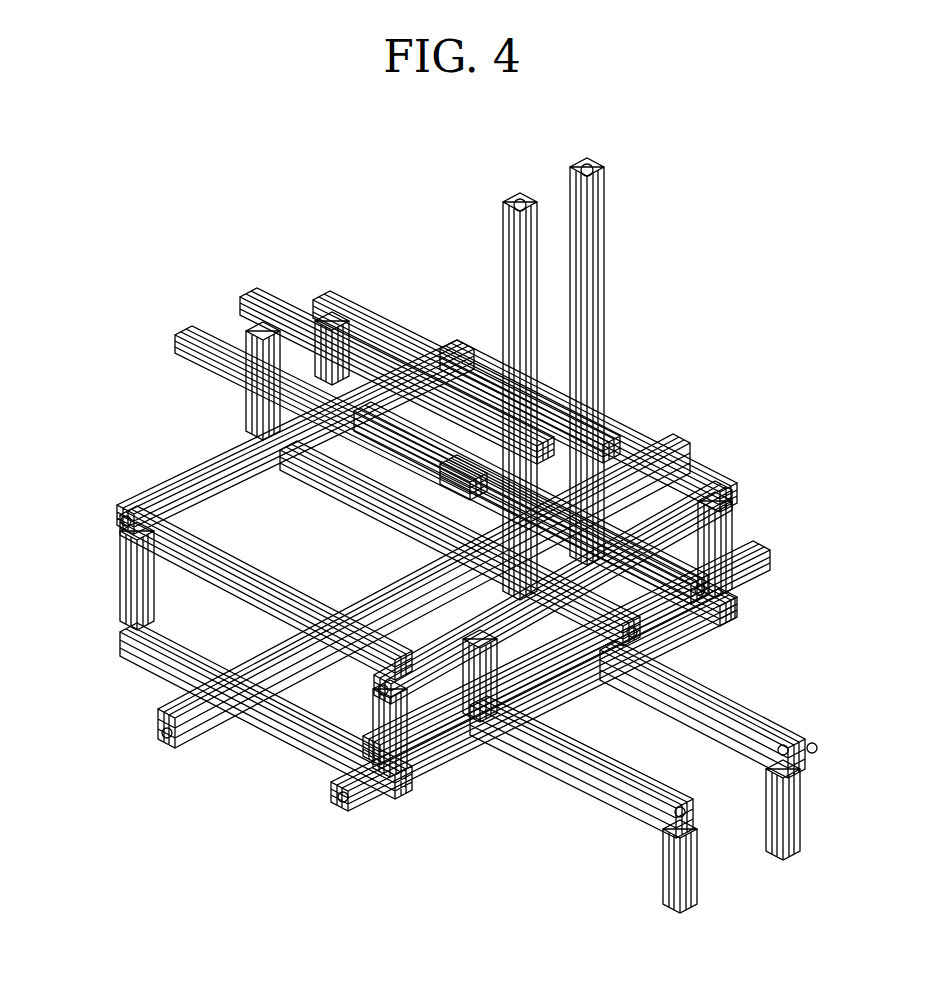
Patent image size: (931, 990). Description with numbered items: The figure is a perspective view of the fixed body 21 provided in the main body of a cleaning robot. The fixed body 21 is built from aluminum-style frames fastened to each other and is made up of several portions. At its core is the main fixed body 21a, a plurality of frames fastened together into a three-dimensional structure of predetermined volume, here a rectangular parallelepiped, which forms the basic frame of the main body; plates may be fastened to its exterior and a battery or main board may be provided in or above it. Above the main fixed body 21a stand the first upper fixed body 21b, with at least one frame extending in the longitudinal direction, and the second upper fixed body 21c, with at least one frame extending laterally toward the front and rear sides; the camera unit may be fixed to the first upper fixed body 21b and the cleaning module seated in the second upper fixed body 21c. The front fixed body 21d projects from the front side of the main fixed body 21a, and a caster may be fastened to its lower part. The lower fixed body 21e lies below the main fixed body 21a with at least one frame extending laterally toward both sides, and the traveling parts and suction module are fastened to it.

The fixed body 21 is at (178, 228).
The main fixed body 21a is at (118, 522).
The first upper fixed body 21b is at (604, 184).
The second upper fixed body 21c is at (356, 298).
The front fixed body 21d is at (612, 828).
The lower fixed body 21e is at (176, 724).